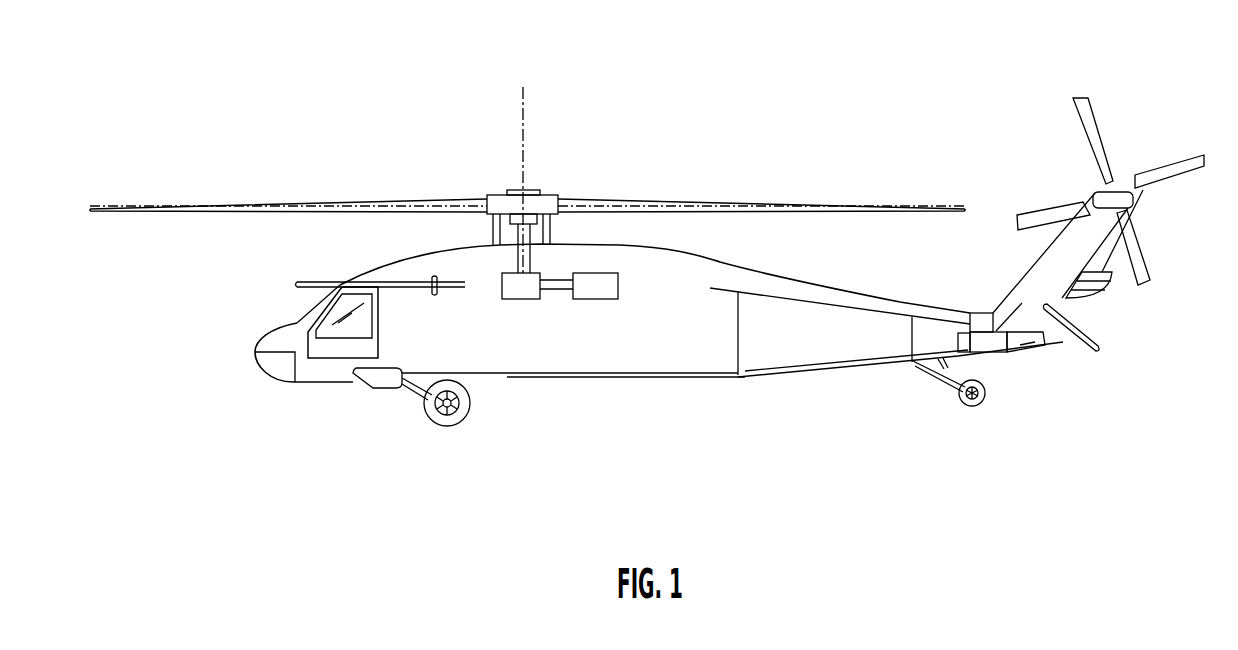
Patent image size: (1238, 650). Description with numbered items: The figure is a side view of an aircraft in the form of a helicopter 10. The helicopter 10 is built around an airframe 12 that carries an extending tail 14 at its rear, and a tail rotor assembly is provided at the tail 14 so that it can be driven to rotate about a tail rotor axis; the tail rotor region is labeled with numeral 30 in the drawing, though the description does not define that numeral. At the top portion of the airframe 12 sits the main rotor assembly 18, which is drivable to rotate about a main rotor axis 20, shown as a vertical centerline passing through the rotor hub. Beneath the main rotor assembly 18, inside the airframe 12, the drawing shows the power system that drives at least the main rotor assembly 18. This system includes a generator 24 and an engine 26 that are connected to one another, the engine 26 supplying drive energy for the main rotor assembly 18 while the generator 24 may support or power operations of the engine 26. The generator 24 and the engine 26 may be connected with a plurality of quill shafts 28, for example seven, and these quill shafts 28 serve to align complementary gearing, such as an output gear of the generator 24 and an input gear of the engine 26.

The helicopter 10 is at (650, 253).
The airframe 12 is at (540, 363).
The extending tail 14 is at (868, 355).
The main rotor assembly 18 is at (350, 205).
The main rotor axis 20 is at (526, 140).
The generator 24 is at (618, 290).
The engine 26 is at (502, 293).
The quill shafts 28 is at (557, 292).
The tail rotor system 30 is at (1135, 262).